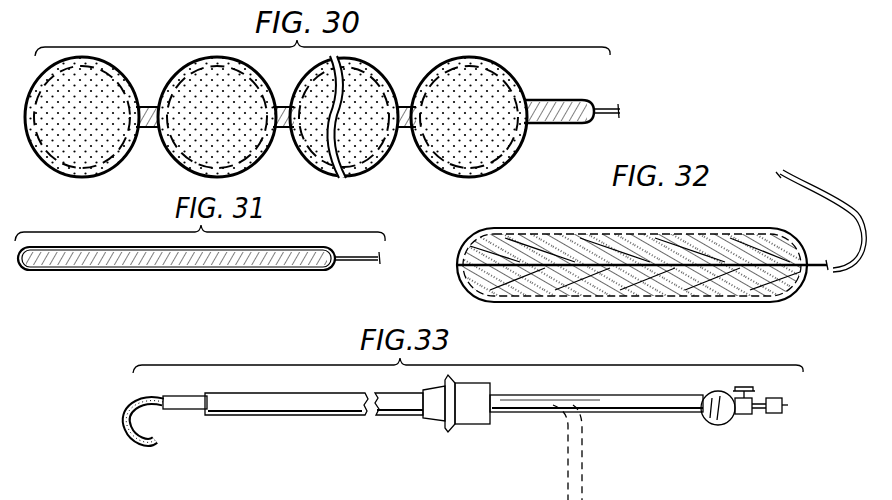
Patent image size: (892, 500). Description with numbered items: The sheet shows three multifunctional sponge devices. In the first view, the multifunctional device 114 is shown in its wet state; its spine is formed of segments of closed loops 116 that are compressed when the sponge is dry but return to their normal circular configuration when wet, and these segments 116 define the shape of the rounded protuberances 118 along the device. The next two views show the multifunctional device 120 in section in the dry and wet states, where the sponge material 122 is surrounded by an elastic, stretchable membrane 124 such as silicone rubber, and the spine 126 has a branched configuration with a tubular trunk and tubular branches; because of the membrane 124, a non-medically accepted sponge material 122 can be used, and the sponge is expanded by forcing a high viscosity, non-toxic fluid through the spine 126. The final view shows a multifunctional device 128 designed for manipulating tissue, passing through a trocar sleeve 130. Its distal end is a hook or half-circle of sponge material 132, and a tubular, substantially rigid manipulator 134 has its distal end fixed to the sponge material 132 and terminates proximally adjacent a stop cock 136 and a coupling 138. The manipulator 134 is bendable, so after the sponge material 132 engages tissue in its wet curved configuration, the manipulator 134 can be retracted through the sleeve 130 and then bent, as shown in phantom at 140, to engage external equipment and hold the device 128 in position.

In FIG. 30, the multifunctional device 114 is at (475, 0).
In FIG. 30, the closed loop segments 116 is at (127, 53).
In FIG. 30, the protuberances 118 is at (100, 175).
In FIG. 31, the multifunctional device 120 is at (180, 276).
In FIG. 32, the multifunctional device 120 is at (582, 306).
In FIG. 32, the sponge material 122 is at (521, 302).
In FIG. 32, the elastic stretchable membrane 124 is at (540, 228).
In FIG. 32, the spine 126 is at (663, 304).
In FIG. 33, the multifunctional device 128 is at (157, 418).
In FIG. 33, the trocar sleeve 130 is at (325, 416).
In FIG. 33, the sponge material 132 is at (125, 436).
In FIG. 33, the tubular manipulator 134 is at (185, 396).
In FIG. 33, the stop cock 136 is at (740, 416).
In FIG. 33, the coupling 138 is at (786, 403).
In FIG. 33, the bent manipulator position 140 is at (585, 487).